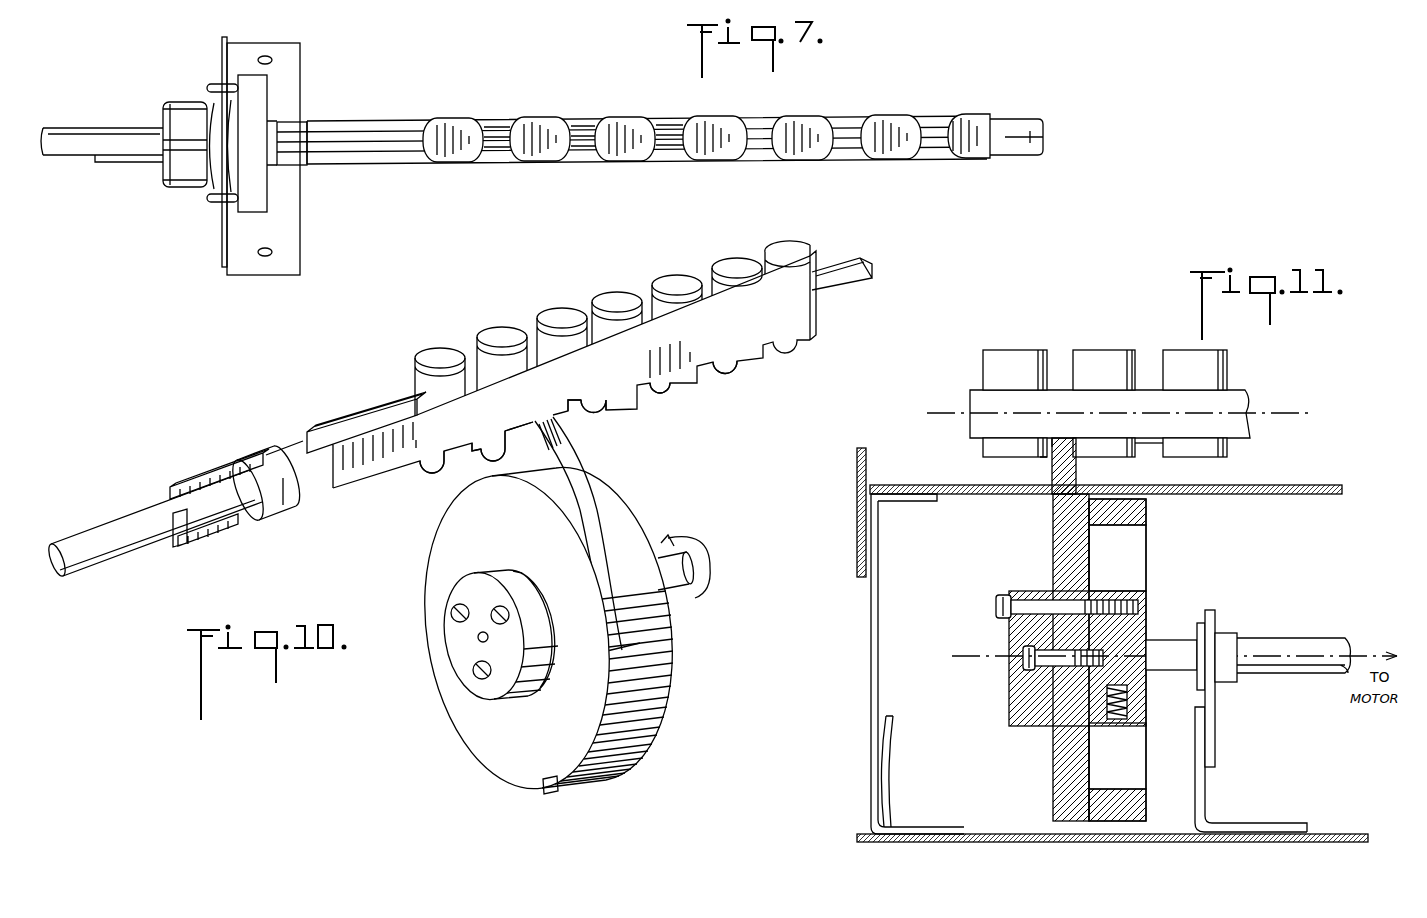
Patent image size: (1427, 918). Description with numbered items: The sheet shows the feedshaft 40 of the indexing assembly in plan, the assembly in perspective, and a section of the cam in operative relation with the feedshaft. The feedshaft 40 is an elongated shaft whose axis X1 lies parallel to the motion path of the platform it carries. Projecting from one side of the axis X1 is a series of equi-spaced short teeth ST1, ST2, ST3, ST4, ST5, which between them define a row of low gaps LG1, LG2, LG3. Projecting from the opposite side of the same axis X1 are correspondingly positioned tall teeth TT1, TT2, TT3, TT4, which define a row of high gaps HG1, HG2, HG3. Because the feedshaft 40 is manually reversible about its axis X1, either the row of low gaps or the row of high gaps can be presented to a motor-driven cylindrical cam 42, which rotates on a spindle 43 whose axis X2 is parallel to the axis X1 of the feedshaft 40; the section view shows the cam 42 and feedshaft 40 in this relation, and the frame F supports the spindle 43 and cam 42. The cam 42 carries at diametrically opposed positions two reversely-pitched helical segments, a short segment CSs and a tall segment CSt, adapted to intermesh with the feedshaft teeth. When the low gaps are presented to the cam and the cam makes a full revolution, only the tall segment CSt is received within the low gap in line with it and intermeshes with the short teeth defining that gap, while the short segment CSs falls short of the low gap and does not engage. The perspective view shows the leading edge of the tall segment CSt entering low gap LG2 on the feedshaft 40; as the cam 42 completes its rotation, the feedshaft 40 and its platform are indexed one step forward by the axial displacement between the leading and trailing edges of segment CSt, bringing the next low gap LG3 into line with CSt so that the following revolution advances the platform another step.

In FIG. 7, the feedshaft 40 is at (392, 160).
In FIG. 10, the feedshaft 40 is at (332, 423).
In FIG. 11, the feedshaft 40 is at (1233, 388).
In FIG. 10, the cylindrical cam 42 is at (663, 688).
In FIG. 11, the cylindrical cam 42 is at (1053, 559).
In FIG. 11, the spindle 43 is at (1286, 641).
In FIG. 7, the tall tooth TT1 is at (453, 160).
In FIG. 10, the tall tooth TT1 is at (430, 353).
In FIG. 7, the tall tooth TT2 is at (540, 155).
In FIG. 10, the tall tooth TT2 is at (491, 336).
In FIG. 11, the tall tooth TT2 is at (1047, 354).
In FIG. 7, the tall tooth TT3 is at (628, 158).
In FIG. 10, the tall tooth TT3 is at (550, 317).
In FIG. 11, the tall tooth TT3 is at (1136, 354).
In FIG. 10, the tall tooth TT4 is at (610, 300).
In FIG. 7, the high gap HG1 is at (497, 124).
In FIG. 7, the high gap HG2 is at (581, 130).
In FIG. 7, the high gap HG3 is at (668, 130).
In FIG. 10, the short tooth ST1 is at (440, 463).
In FIG. 10, the short tooth ST2 is at (500, 452).
In FIG. 11, the short tooth ST2 is at (987, 449).
In FIG. 10, the short tooth ST3 is at (581, 423).
In FIG. 11, the short tooth ST3 is at (1137, 453).
In FIG. 10, the short tooth ST4 is at (634, 403).
In FIG. 11, the short tooth ST4 is at (1227, 457).
In FIG. 10, the short tooth ST5 is at (700, 384).
In FIG. 10, the low gap LG1 is at (503, 432).
In FIG. 11, the low gap LG1 is at (1067, 434).
In FIG. 10, the low gap LG2 is at (534, 421).
In FIG. 11, the low gap LG2 is at (1153, 443).
In FIG. 10, the low gap LG3 is at (584, 399).
In FIG. 10, the tall helical cam segment CSt is at (604, 497).
In FIG. 11, the tall helical cam segment CSt is at (1068, 471).
In FIG. 10, the short helical cam segment CSs is at (549, 795).
In FIG. 11, the frame F is at (1040, 467).
In FIG. 11, the shaft axis X1 is at (938, 410).
In FIG. 11, the spindle axis X2 is at (963, 660).